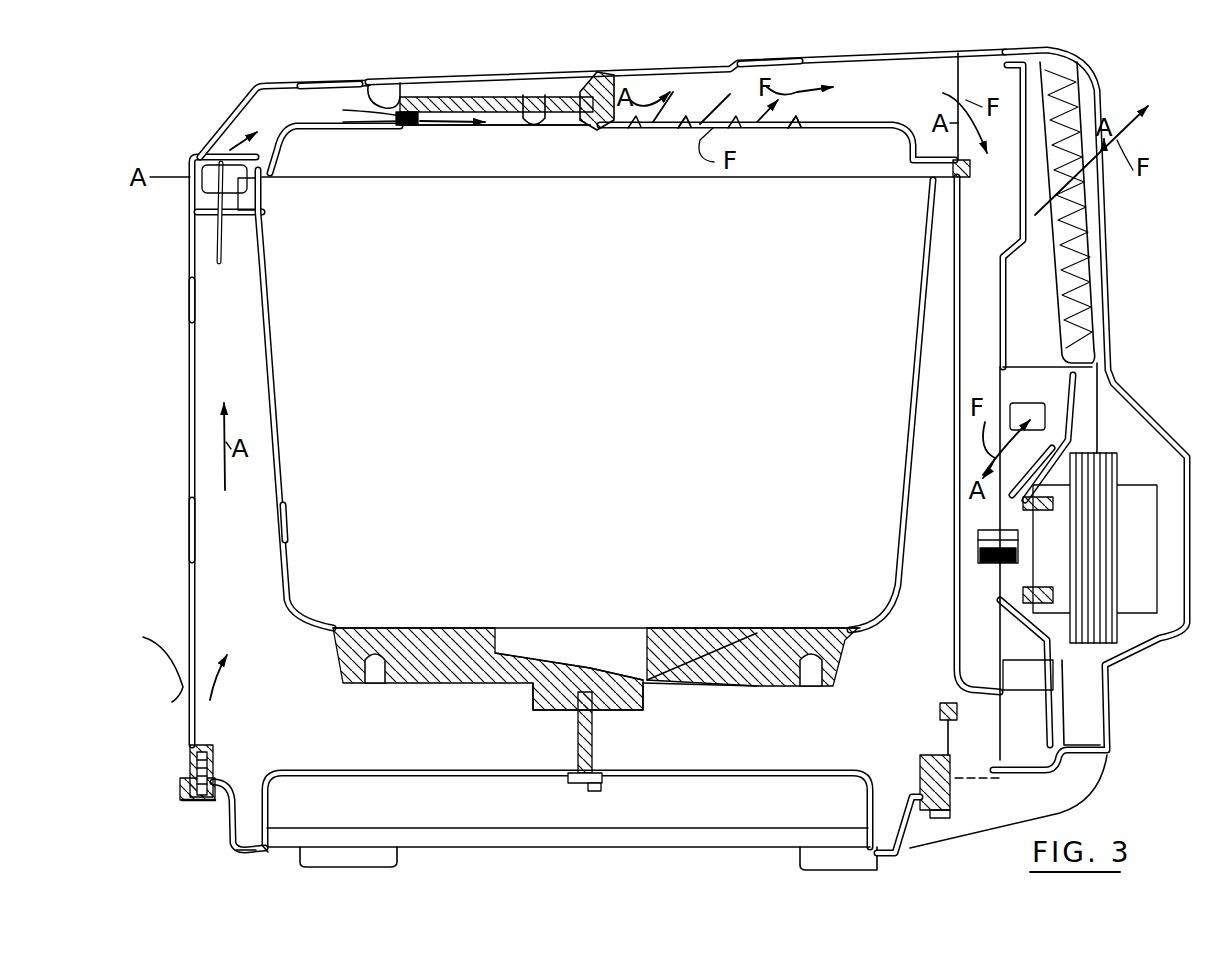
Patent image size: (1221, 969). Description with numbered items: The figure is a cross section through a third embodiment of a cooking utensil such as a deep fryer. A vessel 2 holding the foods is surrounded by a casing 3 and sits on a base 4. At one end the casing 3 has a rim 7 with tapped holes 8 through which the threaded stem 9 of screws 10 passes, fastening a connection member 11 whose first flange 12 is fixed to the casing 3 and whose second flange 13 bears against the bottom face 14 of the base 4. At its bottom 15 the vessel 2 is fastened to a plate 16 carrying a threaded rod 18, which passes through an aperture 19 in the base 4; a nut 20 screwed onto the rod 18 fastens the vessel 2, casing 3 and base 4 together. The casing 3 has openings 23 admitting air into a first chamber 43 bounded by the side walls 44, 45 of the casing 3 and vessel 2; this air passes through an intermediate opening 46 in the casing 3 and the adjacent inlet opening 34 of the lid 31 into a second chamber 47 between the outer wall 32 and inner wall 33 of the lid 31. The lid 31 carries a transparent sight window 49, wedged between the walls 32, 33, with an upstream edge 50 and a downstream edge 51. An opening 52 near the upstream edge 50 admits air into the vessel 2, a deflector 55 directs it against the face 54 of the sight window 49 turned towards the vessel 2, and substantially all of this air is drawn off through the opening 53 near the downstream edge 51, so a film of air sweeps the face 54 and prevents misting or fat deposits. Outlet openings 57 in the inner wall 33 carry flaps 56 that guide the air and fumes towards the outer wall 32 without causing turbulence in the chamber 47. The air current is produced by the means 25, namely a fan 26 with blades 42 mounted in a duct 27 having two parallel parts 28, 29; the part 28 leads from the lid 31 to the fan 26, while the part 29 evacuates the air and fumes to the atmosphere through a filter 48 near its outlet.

The vessel 2 is at (280, 450).
The casing 3 is at (187, 380).
The base 4 is at (483, 834).
The rim 7 is at (202, 743).
The tapped holes 8 is at (183, 767).
The threaded stem 9 is at (248, 765).
The screws 10 is at (190, 807).
The connection member 11 is at (213, 823).
The first flange 12 is at (180, 793).
The second flange 13 is at (247, 851).
The bottom face 14 is at (263, 853).
The bottom 15 is at (558, 630).
The plate 16 is at (507, 686).
The threaded rod 18 is at (595, 743).
The aperture 19 is at (573, 770).
The nut 20 is at (597, 793).
The inlet openings 23 is at (174, 664).
The means for circulation of air 25 is at (1148, 410).
The fan 26 is at (993, 543).
The duct 27 is at (1033, 307).
The duct part 28 is at (980, 310).
The duct part 29 is at (1082, 270).
The lid 31 is at (688, 64).
The outer wall 32 is at (763, 62).
The inner wall 33 is at (321, 130).
The air inlet opening 34 is at (220, 147).
The blades 42 is at (1030, 682).
The first chamber 43 is at (222, 526).
The side wall 44 is at (190, 309).
The side wall 45 is at (280, 530).
The intermediate opening 46 is at (210, 213).
The second chamber 47 is at (280, 110).
The filter 48 is at (1082, 240).
The sight window 49 is at (462, 103).
The upstream edge 50 is at (383, 100).
The downstream edge 51 is at (608, 90).
The air admission opening 52 is at (420, 122).
The air evacuation opening 53 is at (600, 145).
The face of the sight window 54 is at (534, 112).
The deflector 55 is at (405, 125).
The flap 56 is at (672, 130).
The outlet openings 57 is at (787, 130).